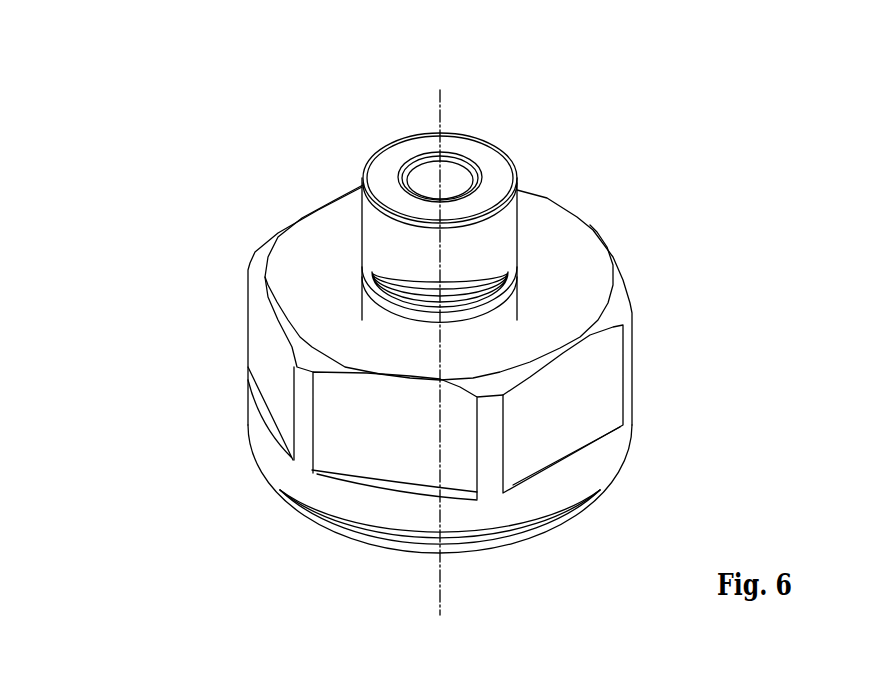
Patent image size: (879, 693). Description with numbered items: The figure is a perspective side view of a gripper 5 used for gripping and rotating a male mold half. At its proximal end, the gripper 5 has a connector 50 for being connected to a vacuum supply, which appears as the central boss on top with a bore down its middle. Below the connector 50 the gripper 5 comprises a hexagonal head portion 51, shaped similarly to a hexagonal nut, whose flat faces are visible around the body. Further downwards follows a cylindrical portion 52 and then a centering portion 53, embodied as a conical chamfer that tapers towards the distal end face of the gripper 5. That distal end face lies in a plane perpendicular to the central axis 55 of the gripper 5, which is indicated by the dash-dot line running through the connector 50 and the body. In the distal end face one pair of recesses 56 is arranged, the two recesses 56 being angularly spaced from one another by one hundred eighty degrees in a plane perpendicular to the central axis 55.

The gripper 5 is at (180, 313).
The connector 50 is at (382, 186).
The hexagonal head portion 51 is at (587, 377).
The cylindrical portion 52 is at (500, 535).
The centering portion 53 is at (368, 547).
The central axis 55 is at (442, 118).
The recesses 56 is at (318, 530).